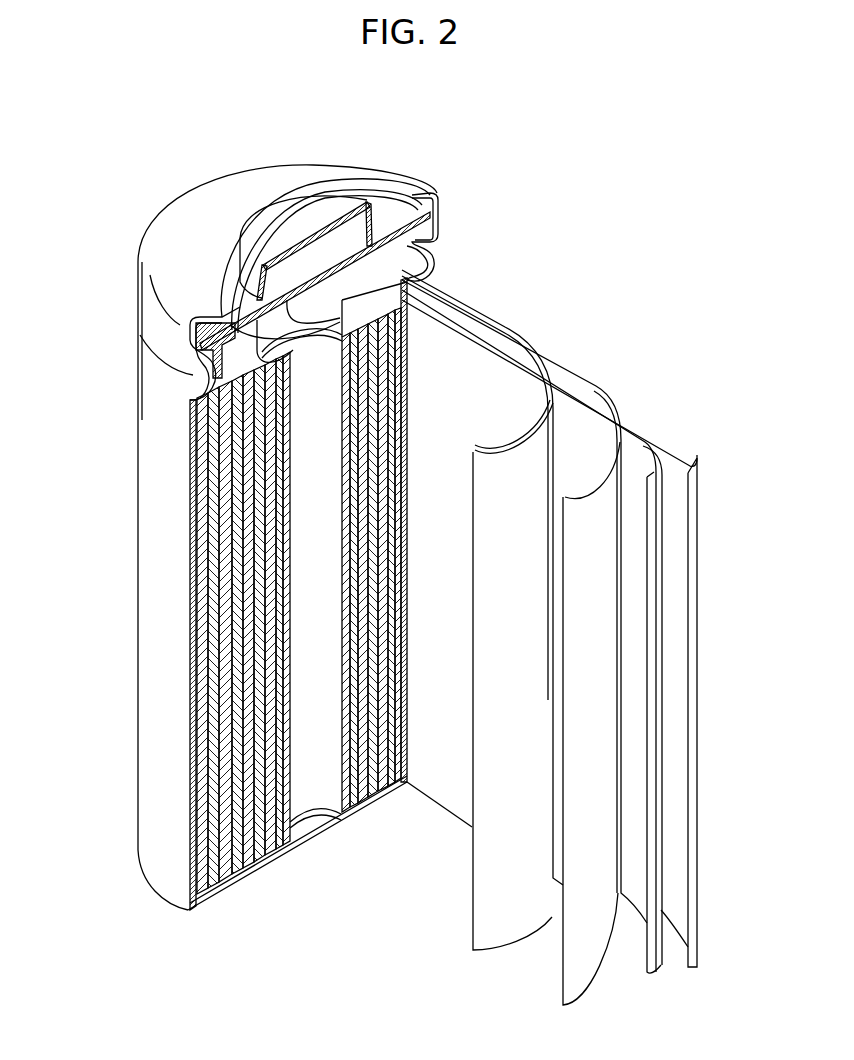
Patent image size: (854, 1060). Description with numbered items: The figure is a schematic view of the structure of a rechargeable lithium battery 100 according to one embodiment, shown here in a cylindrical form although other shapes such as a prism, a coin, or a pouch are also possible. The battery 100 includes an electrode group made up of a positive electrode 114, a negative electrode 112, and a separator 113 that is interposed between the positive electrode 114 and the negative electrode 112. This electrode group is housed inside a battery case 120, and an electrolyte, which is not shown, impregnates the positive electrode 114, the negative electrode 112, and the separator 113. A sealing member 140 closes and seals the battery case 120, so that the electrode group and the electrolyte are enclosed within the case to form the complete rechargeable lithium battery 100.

The rechargeable lithium battery 100 is at (549, 211).
The negative electrode 112 is at (697, 458).
The separator 113 is at (510, 354).
The positive electrode 114 is at (592, 402).
The battery case 120 is at (150, 540).
The sealing member 140 is at (262, 220).